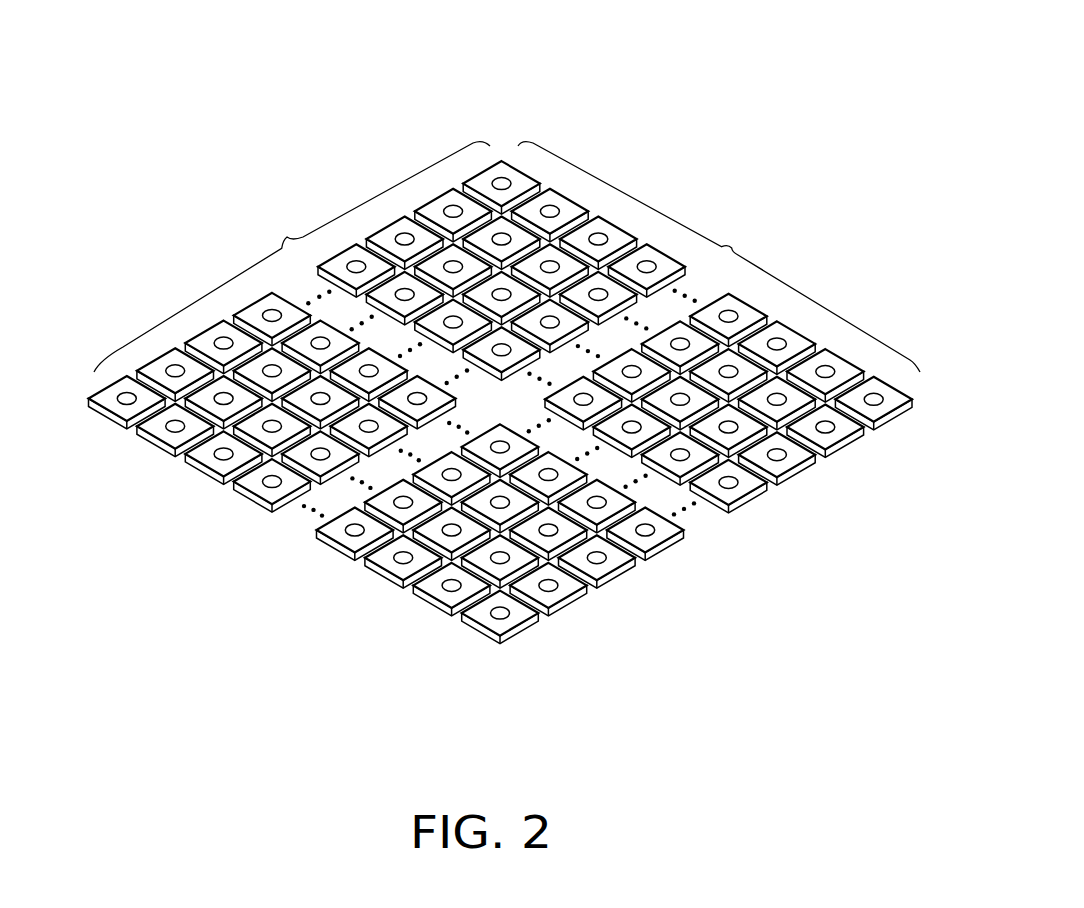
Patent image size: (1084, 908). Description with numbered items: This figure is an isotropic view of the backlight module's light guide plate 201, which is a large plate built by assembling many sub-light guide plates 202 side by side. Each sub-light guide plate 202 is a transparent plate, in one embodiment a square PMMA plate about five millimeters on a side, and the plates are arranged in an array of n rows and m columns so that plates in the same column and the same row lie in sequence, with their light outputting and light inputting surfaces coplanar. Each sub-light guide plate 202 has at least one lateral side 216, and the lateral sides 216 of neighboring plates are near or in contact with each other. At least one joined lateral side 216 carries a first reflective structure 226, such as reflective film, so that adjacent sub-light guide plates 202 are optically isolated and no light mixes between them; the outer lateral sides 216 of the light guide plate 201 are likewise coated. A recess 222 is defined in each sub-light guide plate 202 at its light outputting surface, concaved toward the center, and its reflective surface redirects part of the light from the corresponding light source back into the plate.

The light guide plate 201 is at (455, 60).
The sub-light guide plate 202 is at (181, 486).
The lateral side 216 is at (181, 454).
The first reflective structure 226 is at (180, 484).
The recess 222 is at (194, 498).